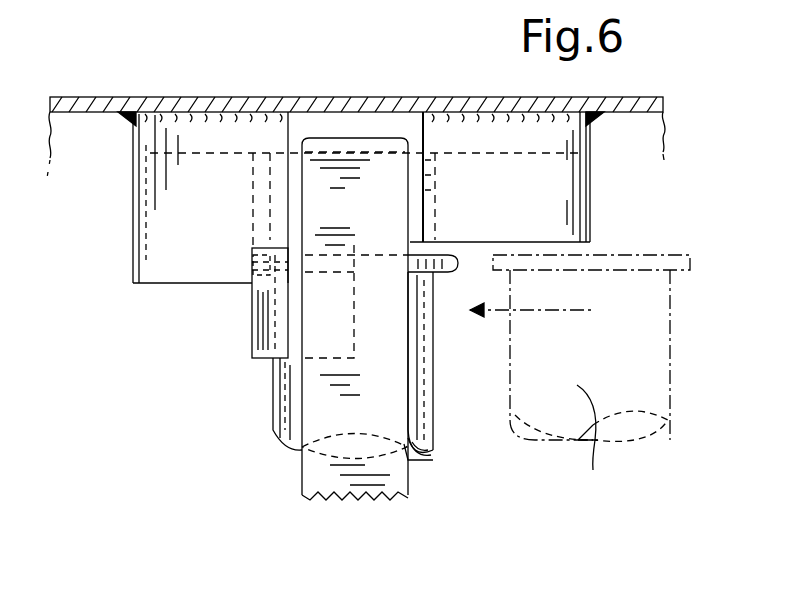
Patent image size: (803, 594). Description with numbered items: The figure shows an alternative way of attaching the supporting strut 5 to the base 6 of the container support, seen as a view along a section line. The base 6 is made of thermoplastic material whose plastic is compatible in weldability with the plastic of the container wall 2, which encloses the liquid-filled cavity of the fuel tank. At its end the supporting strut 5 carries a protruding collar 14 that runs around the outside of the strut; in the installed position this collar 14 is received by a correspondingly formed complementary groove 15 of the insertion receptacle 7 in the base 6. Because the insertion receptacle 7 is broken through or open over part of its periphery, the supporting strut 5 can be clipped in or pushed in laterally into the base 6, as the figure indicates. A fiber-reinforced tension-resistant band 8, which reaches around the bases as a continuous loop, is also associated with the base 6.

The container wall 2 is at (648, 97).
The supporting strut 5 is at (430, 395).
The base 6 is at (582, 203).
The insertion receptacle 7 is at (262, 340).
The tension-resistant band 8 is at (330, 430).
The protruding collar 14 is at (647, 258).
The complementary groove 15 is at (250, 265).